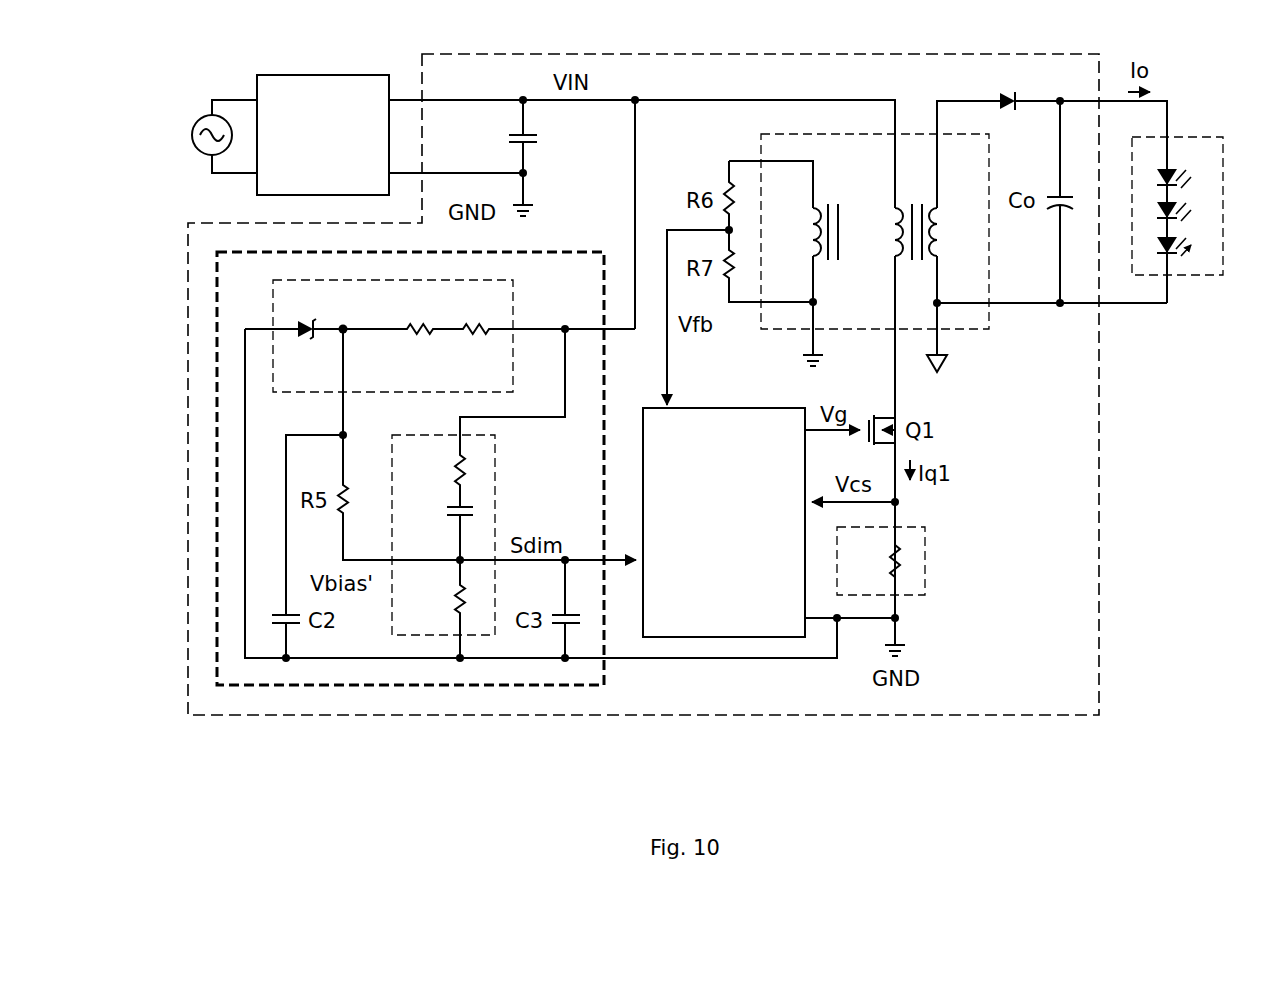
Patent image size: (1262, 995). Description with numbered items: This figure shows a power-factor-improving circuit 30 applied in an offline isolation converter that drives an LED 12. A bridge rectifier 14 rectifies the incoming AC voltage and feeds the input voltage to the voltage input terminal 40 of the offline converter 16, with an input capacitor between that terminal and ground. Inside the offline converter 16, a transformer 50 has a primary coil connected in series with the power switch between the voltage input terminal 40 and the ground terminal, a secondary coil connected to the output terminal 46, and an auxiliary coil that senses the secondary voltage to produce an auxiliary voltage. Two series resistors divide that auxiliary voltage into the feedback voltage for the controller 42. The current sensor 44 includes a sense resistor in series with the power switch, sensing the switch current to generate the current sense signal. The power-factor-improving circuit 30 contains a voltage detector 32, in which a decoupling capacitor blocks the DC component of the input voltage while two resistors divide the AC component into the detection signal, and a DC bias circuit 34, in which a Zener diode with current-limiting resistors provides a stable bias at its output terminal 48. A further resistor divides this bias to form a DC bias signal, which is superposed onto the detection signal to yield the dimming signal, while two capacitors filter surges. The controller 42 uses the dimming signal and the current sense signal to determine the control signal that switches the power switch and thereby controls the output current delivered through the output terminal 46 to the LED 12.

The LED 12 is at (1182, 190).
The bridge rectifier 14 is at (290, 140).
The offline converter 16 is at (675, 384).
The power-factor-improving circuit 30 is at (410, 441).
The voltage detector 32 is at (478, 495).
The DC bias circuit 34 is at (440, 336).
The voltage input terminal 40 is at (525, 136).
The controller 42 is at (724, 497).
The current sensor 44 is at (911, 561).
The output terminal 46 is at (1052, 118).
The output terminal of the DC bias circuit 48 is at (356, 337).
The transformer 50 is at (932, 247).